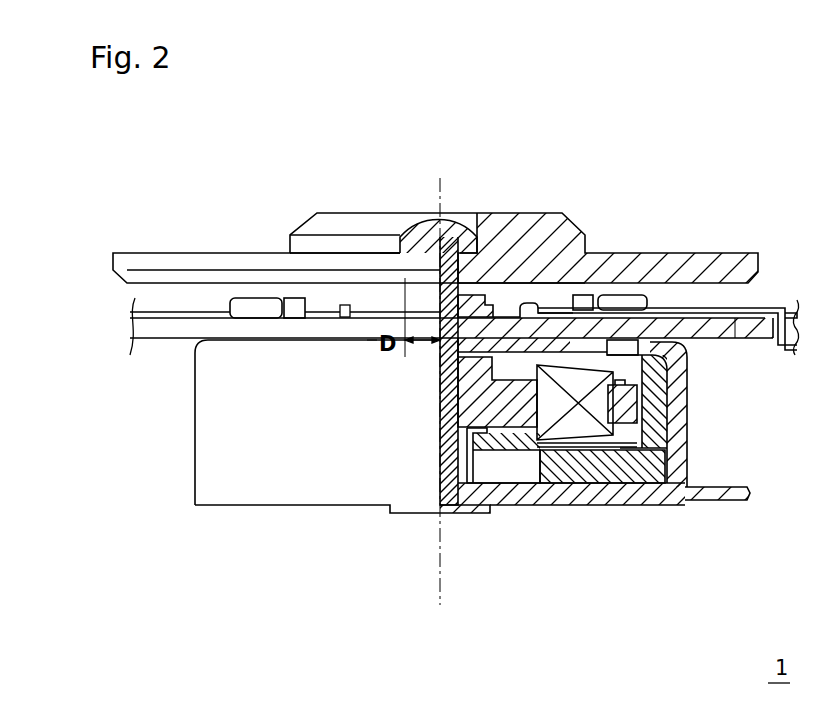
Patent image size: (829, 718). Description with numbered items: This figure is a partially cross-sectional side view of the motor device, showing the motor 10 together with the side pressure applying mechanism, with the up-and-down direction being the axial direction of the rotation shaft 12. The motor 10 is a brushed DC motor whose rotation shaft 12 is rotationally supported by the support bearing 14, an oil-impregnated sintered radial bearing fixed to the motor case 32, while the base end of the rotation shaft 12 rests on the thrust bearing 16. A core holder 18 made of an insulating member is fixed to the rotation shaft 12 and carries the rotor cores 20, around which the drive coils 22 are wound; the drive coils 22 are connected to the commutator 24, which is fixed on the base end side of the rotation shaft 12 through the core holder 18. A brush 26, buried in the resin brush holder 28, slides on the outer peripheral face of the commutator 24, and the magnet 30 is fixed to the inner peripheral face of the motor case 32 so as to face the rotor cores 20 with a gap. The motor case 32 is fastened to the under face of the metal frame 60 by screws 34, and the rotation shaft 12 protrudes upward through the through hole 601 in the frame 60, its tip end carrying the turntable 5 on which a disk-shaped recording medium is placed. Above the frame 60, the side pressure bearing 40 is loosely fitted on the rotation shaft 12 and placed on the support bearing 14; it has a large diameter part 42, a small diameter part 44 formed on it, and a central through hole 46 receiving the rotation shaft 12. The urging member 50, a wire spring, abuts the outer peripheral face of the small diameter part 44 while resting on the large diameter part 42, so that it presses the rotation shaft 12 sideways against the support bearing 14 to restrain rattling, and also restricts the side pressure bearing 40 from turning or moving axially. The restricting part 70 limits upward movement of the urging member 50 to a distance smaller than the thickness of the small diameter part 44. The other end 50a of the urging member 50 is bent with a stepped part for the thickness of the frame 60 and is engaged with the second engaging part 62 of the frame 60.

The turntable 5 is at (673, 253).
The motor 10 is at (190, 520).
The rotation shaft 12 is at (418, 500).
The support bearing 14 is at (417, 235).
The thrust bearing 16 is at (468, 513).
The core holder 18 is at (492, 484).
The rotor core 20 is at (688, 441).
The drive coil 22 is at (625, 483).
The commutator 24 is at (528, 450).
The brush 26 is at (590, 448).
The brush holder 28 is at (700, 500).
The magnet 30 is at (677, 409).
The motor case 32 is at (668, 374).
The screw 34 is at (253, 298).
The side pressure bearing 40 is at (530, 150).
The large diameter part 42 is at (499, 296).
The small diameter part 44 is at (453, 250).
The through hole 46 is at (438, 237).
The urging member 50 is at (770, 308).
The other end of urging member 50a is at (792, 318).
The frame 60 is at (143, 340).
The second engaging part 62 is at (740, 326).
The restricting part 70 is at (292, 298).
The through hole 601 is at (535, 304).